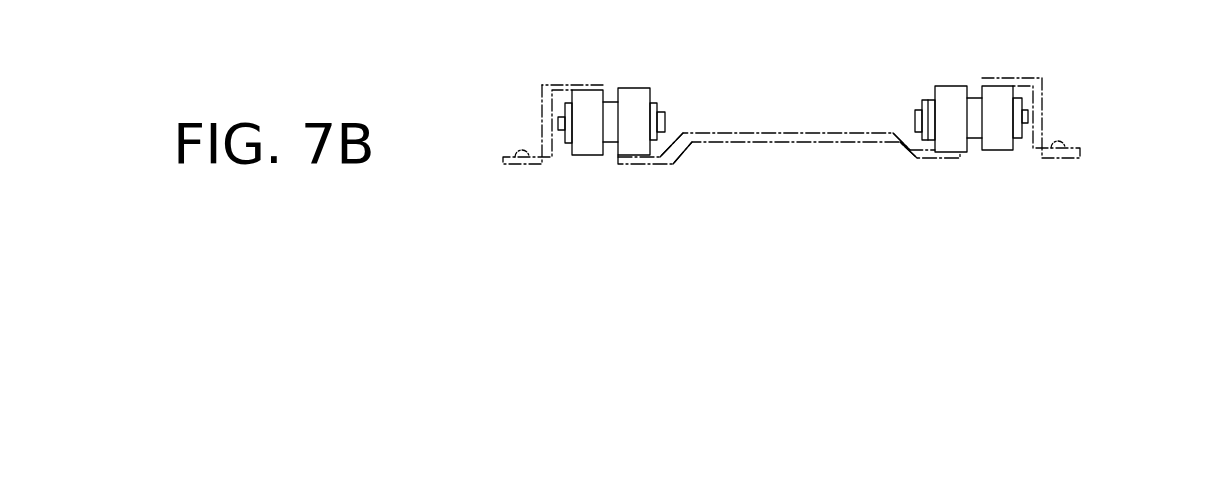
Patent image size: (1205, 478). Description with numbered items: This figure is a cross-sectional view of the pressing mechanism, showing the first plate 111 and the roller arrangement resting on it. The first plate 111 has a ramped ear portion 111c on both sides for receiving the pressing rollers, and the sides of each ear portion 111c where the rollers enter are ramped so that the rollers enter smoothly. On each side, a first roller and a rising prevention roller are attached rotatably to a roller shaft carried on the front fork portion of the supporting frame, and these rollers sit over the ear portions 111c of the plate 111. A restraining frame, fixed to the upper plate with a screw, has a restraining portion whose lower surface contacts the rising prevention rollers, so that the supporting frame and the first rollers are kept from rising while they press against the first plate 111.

The first plate 111 is at (795, 133).
The ramped ear portion 111c is at (630, 163).